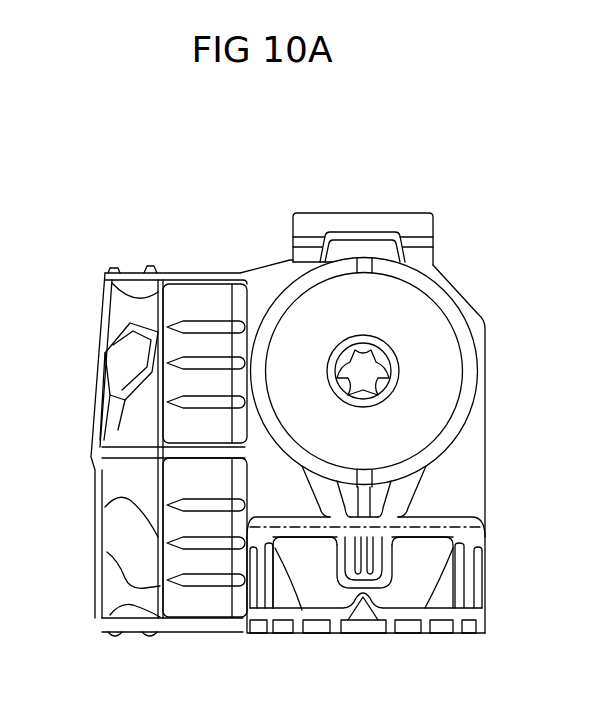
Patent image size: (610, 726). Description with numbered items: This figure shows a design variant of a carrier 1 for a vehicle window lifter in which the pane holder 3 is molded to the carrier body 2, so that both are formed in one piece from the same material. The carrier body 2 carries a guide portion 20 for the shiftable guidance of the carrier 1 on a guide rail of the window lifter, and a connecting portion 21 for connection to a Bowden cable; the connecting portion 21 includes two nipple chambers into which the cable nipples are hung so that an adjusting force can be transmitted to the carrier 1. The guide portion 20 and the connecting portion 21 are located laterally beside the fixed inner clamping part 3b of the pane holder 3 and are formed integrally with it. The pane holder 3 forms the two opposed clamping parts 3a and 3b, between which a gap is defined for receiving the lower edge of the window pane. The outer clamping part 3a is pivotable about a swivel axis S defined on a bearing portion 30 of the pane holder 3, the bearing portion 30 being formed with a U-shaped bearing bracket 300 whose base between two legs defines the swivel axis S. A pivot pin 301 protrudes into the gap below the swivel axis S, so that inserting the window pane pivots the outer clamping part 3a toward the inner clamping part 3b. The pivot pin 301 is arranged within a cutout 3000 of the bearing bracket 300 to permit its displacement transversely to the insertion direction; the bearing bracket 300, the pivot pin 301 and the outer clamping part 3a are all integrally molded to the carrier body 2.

The carrier 1 is at (494, 221).
The carrier body 2 is at (131, 262).
The guide portion 20 is at (152, 268).
The connecting portion 21 is at (117, 535).
The pane holder 3 is at (470, 295).
The outer clamping part 3a is at (462, 363).
The inner clamping part 3b is at (302, 228).
The bearing portion 30 is at (496, 519).
The swivel axis S is at (486, 527).
The bearing bracket 300 is at (258, 540).
The pivot pin 301 is at (360, 573).
The cutout 3000 is at (427, 572).